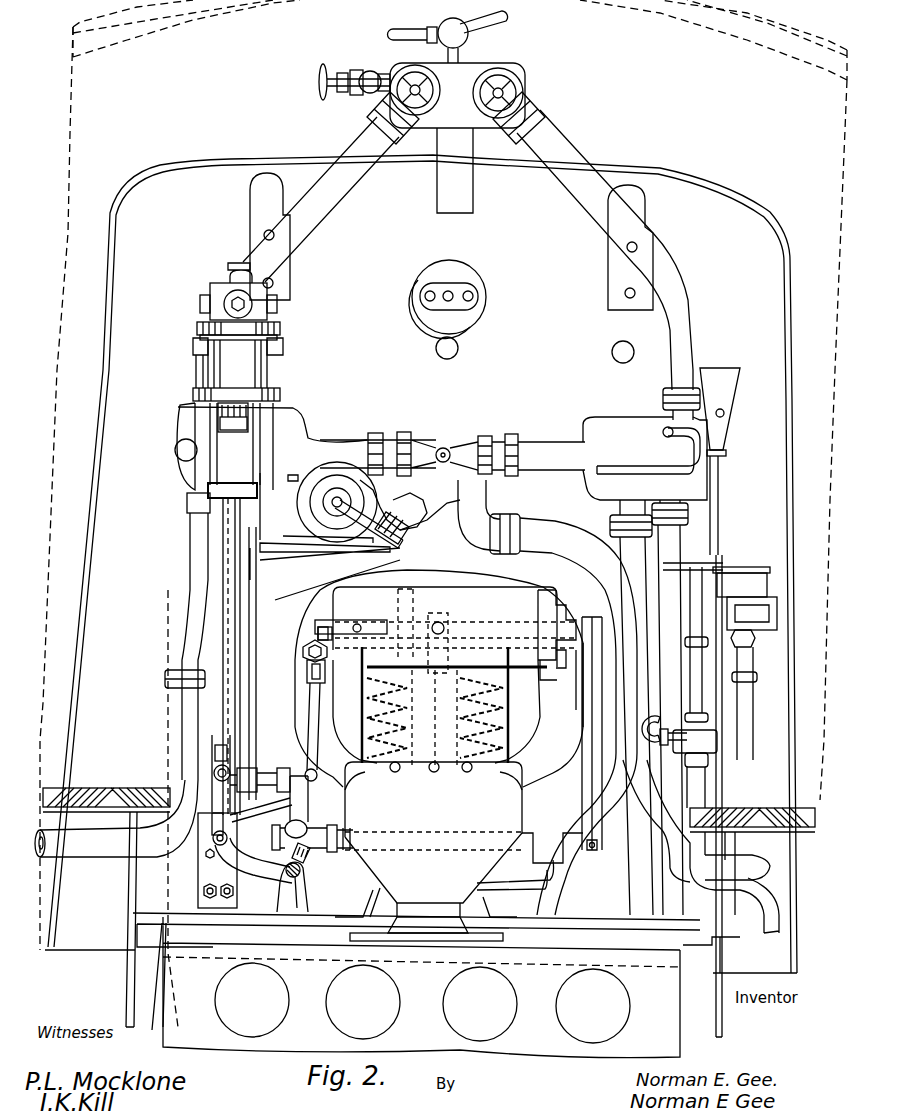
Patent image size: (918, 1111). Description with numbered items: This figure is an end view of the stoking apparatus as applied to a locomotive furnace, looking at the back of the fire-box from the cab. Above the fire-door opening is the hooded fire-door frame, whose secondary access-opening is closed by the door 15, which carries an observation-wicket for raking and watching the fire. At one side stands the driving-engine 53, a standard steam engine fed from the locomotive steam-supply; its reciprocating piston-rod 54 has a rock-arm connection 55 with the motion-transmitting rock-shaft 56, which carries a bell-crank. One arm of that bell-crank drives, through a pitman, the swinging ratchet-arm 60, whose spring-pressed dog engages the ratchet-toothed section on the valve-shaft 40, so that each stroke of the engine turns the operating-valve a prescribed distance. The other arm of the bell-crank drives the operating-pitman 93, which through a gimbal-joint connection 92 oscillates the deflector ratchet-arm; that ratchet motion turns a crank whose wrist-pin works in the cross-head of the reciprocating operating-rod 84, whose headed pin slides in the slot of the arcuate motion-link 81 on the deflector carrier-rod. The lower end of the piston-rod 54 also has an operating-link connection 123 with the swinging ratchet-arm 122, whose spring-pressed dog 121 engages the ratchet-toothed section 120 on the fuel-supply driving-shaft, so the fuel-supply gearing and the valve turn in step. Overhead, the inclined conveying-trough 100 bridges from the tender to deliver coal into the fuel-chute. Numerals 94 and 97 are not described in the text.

The door 15 is at (460, 592).
The valve-shaft 40 is at (527, 843).
The driving-engine 53 is at (262, 371).
The piston-rod 54 is at (223, 599).
The rock-arm connection 55 is at (215, 752).
The motion-transmitting rock-shaft 56 is at (264, 773).
The swinging ratchet-arm 60 is at (300, 810).
The arcuate motion-link 81 is at (416, 668).
The reciprocating operating-rod 84 is at (553, 657).
The gimbal-joint connection 92 is at (307, 664).
The operating-pitman 93 is at (318, 723).
The stepped clamp 94 is at (560, 621).
The jacket edge 97 is at (588, 773).
The inclined conveying-trough 100 is at (528, 726).
The ratchet-toothed section 120 is at (293, 890).
The spring-pressed dog 121 is at (308, 858).
The swinging ratchet-arm 122 is at (263, 873).
The operating-link connection 123 is at (212, 827).